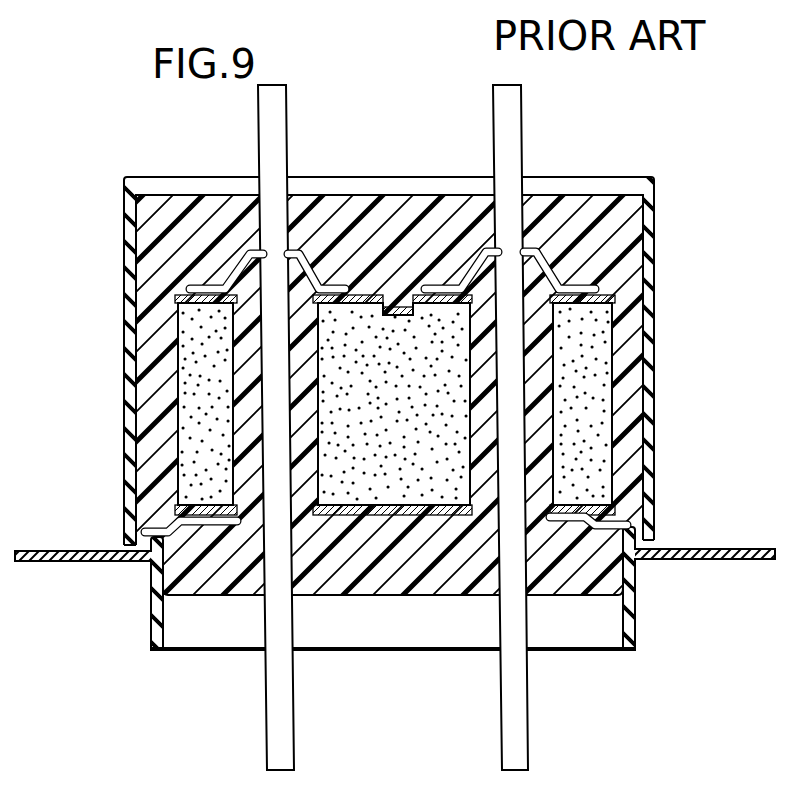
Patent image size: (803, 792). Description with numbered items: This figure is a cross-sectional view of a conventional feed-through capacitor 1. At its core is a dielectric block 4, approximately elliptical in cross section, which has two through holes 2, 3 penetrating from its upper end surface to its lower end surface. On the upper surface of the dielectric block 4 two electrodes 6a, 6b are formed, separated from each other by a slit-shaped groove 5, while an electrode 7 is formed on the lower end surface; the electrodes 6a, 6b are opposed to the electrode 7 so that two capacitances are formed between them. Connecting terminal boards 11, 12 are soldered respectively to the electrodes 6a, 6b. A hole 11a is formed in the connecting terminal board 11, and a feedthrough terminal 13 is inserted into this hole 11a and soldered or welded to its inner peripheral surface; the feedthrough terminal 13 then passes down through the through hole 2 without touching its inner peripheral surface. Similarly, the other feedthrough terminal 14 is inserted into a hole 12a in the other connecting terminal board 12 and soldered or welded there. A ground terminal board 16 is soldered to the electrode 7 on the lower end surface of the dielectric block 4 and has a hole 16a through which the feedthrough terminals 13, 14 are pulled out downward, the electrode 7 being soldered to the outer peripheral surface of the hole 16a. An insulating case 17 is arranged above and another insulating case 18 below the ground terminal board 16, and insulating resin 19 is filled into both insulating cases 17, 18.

The feed-through capacitor 1 is at (401, 430).
The through hole 2 is at (245, 432).
The through hole 3 is at (611, 450).
The dielectric block 4 is at (622, 390).
The slit-shaped groove 5 is at (397, 302).
The electrode 6a is at (176, 298).
The electrode 6b is at (611, 296).
The electrode 7 is at (378, 530).
The connecting terminal board 11 is at (195, 262).
The hole 11a is at (291, 253).
The connecting terminal board 12 is at (577, 262).
The hole 12a is at (504, 252).
The feedthrough terminal 13 is at (272, 744).
The feedthrough terminal 14 is at (516, 728).
The ground terminal board 16 is at (62, 552).
The hole 16a is at (233, 520).
The insulating case 17 is at (650, 222).
The insulating case 18 is at (636, 634).
The insulating resin 19 is at (162, 250).